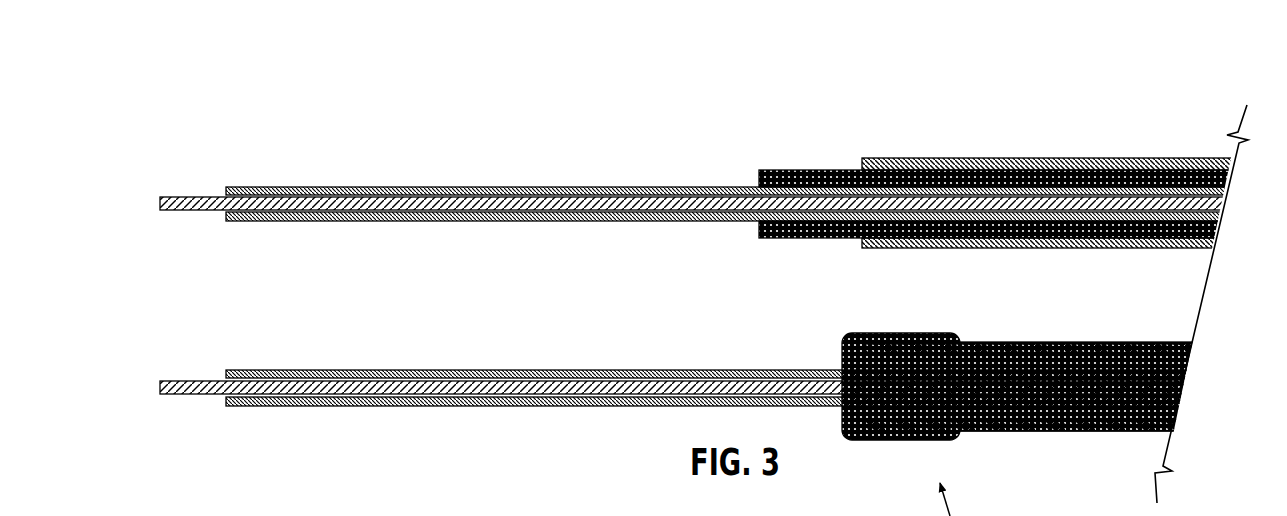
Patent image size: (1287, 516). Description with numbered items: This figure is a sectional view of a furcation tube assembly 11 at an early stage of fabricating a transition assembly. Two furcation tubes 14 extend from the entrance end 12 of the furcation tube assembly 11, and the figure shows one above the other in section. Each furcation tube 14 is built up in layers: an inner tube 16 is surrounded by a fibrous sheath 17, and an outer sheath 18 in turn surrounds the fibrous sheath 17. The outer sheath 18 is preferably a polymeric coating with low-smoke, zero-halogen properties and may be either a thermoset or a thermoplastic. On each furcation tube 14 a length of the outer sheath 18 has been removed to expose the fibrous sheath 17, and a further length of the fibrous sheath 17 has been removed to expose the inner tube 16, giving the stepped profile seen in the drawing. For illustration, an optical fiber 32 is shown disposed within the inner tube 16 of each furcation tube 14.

The furcation tube assembly 11 is at (1155, 97).
The entrance end 12 is at (918, 108).
The furcation tube 14 is at (1155, 160).
The inner tube 16 is at (293, 187).
The fibrous sheath 17 is at (810, 171).
The outer sheath 18 is at (1003, 158).
The optical fiber 32 is at (170, 197).